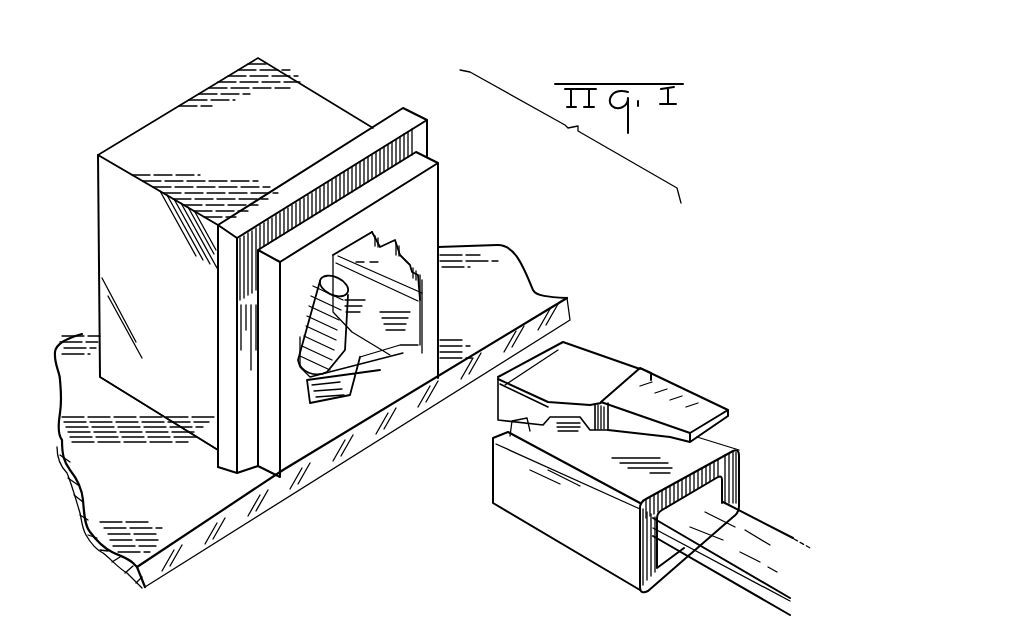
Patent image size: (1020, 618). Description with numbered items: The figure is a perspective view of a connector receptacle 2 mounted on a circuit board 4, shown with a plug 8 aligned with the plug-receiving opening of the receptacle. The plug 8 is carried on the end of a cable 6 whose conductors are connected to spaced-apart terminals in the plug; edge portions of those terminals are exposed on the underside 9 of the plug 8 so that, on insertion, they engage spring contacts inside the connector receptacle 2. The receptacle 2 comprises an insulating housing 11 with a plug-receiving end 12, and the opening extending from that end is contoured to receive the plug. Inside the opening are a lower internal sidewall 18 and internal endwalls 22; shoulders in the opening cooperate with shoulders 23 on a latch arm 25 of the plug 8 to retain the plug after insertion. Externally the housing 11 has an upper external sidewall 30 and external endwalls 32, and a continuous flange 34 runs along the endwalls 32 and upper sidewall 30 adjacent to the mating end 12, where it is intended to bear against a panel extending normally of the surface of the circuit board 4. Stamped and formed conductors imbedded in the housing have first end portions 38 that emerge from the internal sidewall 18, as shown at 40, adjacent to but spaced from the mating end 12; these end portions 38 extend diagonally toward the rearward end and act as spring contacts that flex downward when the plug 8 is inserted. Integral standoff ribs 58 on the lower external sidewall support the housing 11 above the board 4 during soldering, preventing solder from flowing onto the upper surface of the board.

The connector receptacle 2 is at (333, 76).
The circuit board 4 is at (533, 294).
The cable 6 is at (730, 561).
The plug 8 is at (671, 326).
The underside of the plug 9 is at (576, 557).
The insulating housing 11 is at (353, 111).
The plug-receiving end 12 is at (367, 217).
The lower internal sidewall 18 is at (355, 385).
The internal endwalls 22 is at (403, 313).
The shoulders on latch arm 23 is at (597, 432).
The latch arm 25 is at (677, 392).
The upper external sidewall 30 is at (237, 117).
The external endwalls 32 is at (223, 443).
The continuous flange 34 is at (407, 120).
The first end portions of conductors 38 is at (338, 300).
The emergence location of conductor end portions 40 is at (352, 378).
The standoff ribs 58 is at (437, 380).